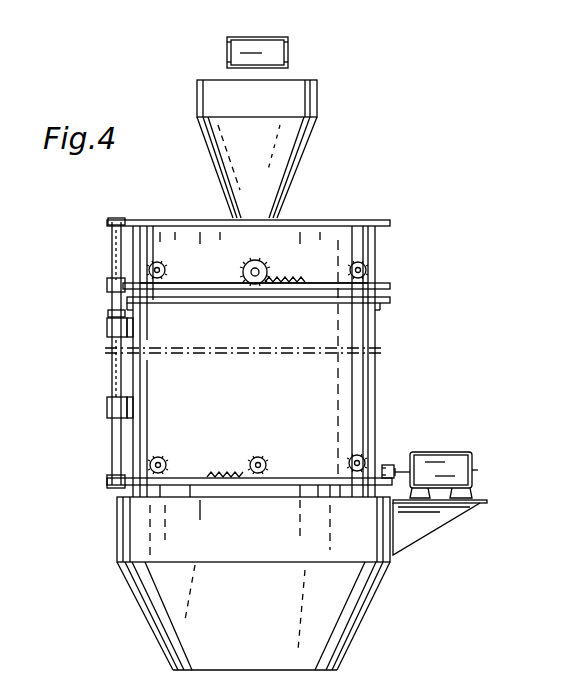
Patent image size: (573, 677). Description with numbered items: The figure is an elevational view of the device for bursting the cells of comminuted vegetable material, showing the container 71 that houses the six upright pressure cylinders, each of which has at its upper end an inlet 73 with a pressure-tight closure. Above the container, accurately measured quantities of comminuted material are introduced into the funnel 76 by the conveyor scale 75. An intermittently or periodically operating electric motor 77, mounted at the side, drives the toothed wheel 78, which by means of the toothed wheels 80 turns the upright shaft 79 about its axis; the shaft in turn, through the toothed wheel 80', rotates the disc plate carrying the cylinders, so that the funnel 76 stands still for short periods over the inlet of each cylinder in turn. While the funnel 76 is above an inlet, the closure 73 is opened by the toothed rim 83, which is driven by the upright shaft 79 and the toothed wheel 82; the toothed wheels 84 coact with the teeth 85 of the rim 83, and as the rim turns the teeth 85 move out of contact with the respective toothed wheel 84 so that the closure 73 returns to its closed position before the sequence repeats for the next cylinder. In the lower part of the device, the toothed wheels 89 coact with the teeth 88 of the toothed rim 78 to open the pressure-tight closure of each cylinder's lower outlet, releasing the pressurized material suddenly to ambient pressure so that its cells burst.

The container 71 is at (366, 393).
The inlet 73 is at (372, 221).
The conveyor scale 75 is at (276, 41).
The funnel 76 is at (318, 100).
The electric motor 77 is at (444, 466).
The toothed wheel 78 is at (309, 484).
The upright shaft 79 is at (112, 440).
The toothed wheels 80 is at (227, 485).
The toothed wheel 80' is at (93, 225).
The toothed wheel 82 is at (107, 287).
The toothed rim 83 is at (200, 286).
The toothed wheels 84 is at (157, 262).
The teeth 85 is at (292, 281).
The teeth 88 is at (220, 473).
The toothed wheels 89 is at (165, 458).